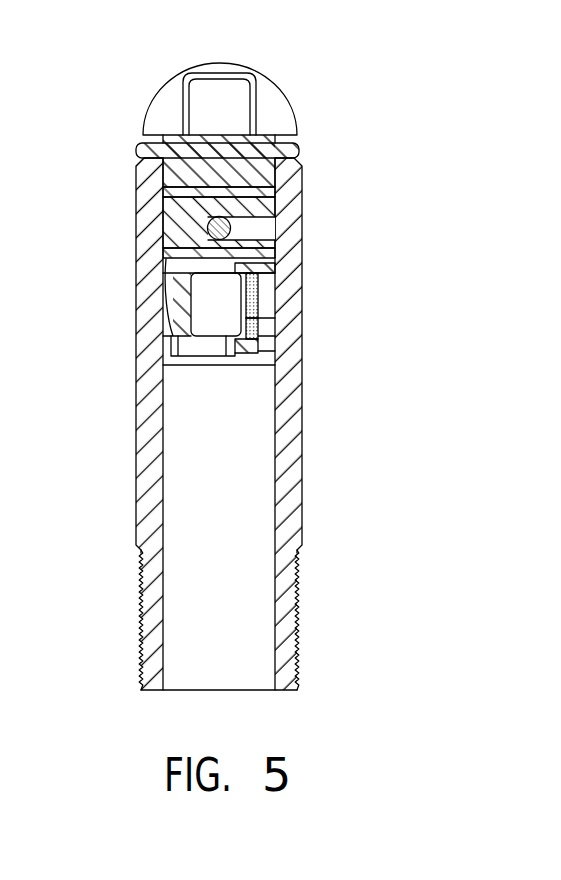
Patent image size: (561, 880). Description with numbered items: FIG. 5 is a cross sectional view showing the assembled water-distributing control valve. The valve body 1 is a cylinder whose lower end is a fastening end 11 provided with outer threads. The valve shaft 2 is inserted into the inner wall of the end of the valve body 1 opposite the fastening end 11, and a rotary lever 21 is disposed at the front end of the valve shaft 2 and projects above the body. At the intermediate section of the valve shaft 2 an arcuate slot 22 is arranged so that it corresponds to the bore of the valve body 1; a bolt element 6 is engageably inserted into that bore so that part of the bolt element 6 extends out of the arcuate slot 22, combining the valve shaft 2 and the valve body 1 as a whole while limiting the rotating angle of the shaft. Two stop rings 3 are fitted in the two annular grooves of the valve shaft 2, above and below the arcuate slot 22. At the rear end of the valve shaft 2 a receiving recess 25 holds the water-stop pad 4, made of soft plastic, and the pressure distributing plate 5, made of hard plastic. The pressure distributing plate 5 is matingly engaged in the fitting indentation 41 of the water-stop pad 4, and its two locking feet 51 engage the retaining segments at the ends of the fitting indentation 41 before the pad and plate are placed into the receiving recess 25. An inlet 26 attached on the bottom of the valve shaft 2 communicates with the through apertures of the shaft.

The valve body 1 is at (313, 440).
The fastening end 11 is at (298, 626).
The valve shaft 2 is at (133, 143).
The rotary lever 21 is at (265, 76).
The arcuate slot 22 is at (258, 232).
The stop ring 3 is at (152, 187).
The water-stop pad 4 is at (280, 300).
The fitting indentation 41 is at (250, 320).
The locking foot 51 is at (250, 320).
The pressure distributing plate 5 is at (267, 346).
The bolt element 6 is at (198, 228).
The receiving recess 25 is at (163, 335).
The inlet 26 is at (200, 362).